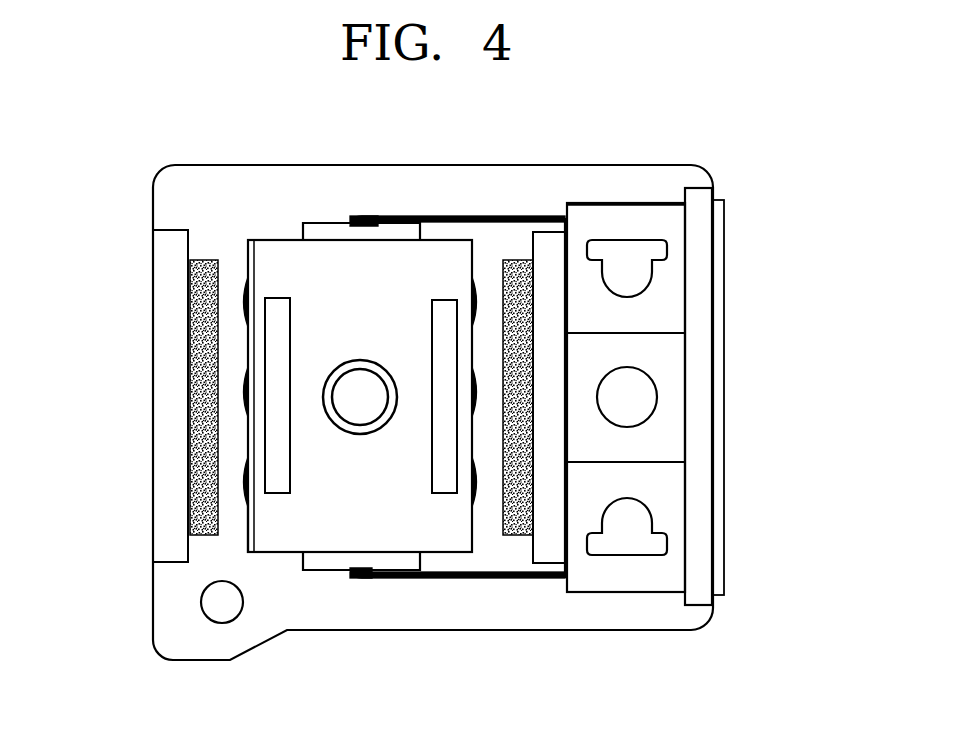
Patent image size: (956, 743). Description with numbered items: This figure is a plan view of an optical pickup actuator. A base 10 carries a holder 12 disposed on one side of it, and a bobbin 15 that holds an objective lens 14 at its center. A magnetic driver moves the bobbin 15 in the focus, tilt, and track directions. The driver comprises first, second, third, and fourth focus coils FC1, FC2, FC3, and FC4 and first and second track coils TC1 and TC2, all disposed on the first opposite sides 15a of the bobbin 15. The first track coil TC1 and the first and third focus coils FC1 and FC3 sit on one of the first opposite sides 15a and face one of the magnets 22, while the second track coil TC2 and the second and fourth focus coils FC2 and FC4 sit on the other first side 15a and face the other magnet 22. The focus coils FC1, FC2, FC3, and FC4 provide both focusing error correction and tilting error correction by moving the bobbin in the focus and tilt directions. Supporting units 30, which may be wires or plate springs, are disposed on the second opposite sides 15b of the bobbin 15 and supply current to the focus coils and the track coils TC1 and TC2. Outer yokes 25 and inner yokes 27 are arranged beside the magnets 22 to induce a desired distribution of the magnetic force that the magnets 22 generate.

The base 10 is at (408, 640).
The holder 12 is at (626, 578).
The objective lens 14 is at (362, 380).
The bobbin 15 is at (447, 232).
The first opposite sides 15a is at (248, 523).
The second opposite sides 15b is at (283, 557).
The magnet 22 is at (190, 287).
The outer yoke 25 is at (167, 253).
The inner yoke 27 is at (277, 297).
The supporting unit 30 is at (400, 215).
The first focus coil FC1 is at (478, 312).
The second focus coil FC2 is at (247, 313).
The third focus coil FC3 is at (478, 495).
The fourth focus coil FC4 is at (245, 492).
The first track coil TC1 is at (478, 408).
The second track coil TC2 is at (245, 400).